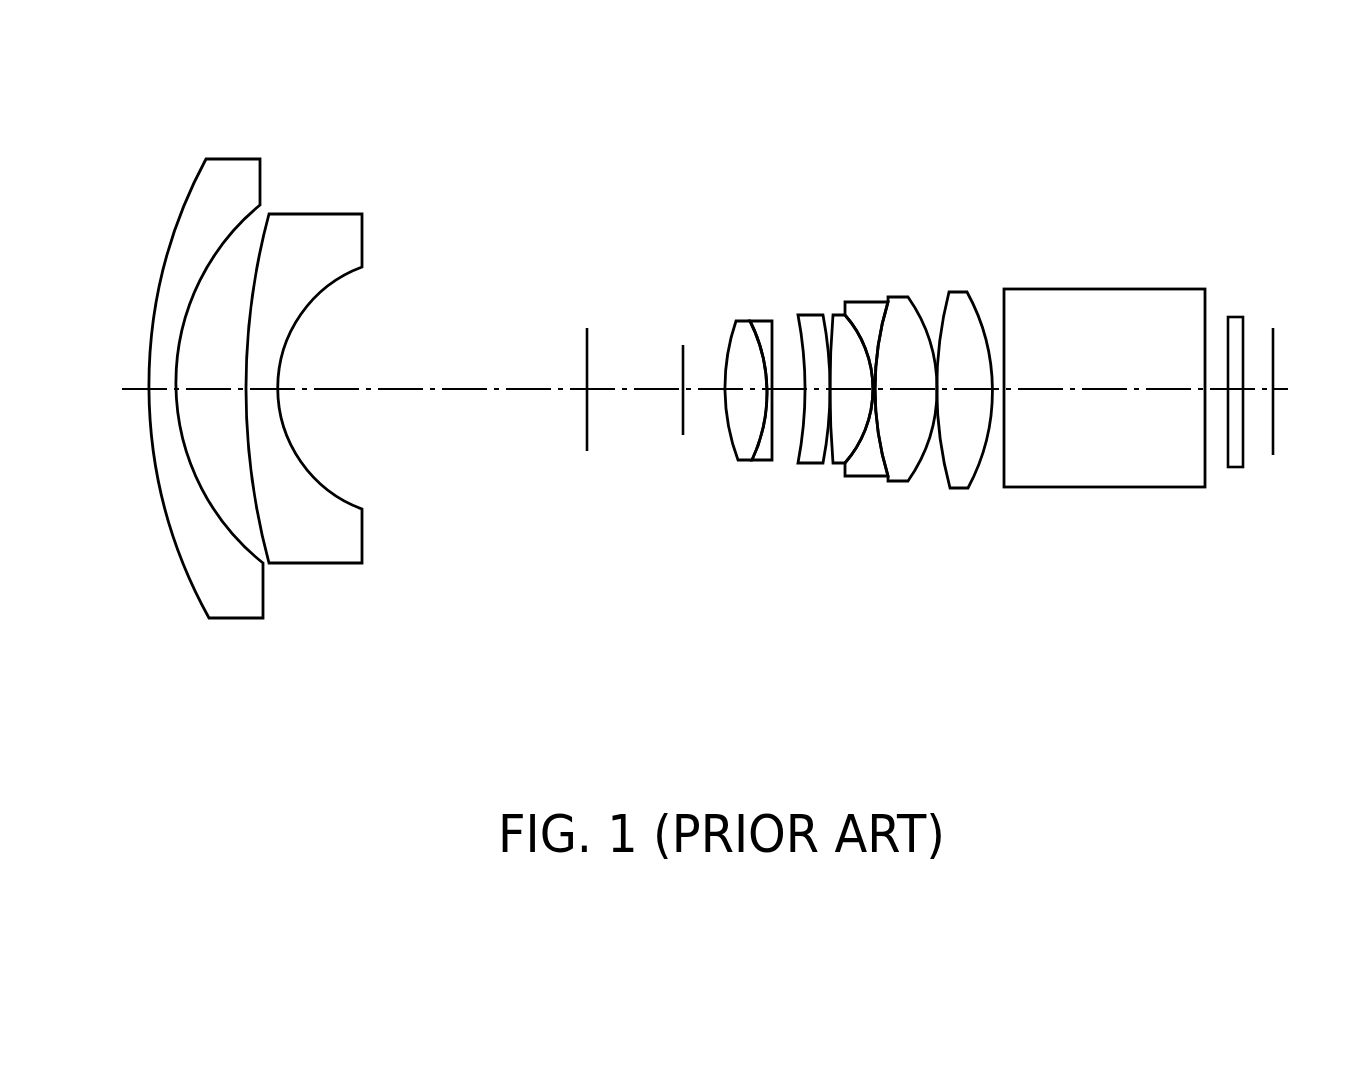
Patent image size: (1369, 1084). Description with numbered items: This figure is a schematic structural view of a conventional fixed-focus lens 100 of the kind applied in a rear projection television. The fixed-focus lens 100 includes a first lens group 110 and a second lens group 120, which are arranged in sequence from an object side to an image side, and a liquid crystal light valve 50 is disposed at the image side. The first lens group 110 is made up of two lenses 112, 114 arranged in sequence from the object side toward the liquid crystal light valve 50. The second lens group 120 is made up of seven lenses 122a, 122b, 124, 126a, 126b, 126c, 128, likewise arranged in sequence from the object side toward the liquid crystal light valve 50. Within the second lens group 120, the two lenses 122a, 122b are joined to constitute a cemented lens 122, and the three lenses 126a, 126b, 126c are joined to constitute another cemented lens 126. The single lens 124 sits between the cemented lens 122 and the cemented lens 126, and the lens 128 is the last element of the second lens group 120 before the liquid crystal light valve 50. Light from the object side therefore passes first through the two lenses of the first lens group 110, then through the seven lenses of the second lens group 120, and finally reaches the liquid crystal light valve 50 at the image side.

The fixed-focus lens 100 is at (705, 454).
The first lens group 110 is at (255, 454).
The lens 112 is at (230, 613).
The lens 114 is at (303, 600).
The second lens group 120 is at (846, 480).
The cemented lens 122 is at (714, 470).
The lens 122a is at (740, 442).
The lens 122b is at (763, 455).
The lens 124 is at (812, 463).
The cemented lens 126 is at (899, 458).
The lens 126a is at (842, 463).
The lens 126b is at (868, 470).
The lens 126c is at (931, 434).
The lens 128 is at (985, 456).
The liquid crystal light valve 50 is at (1273, 443).